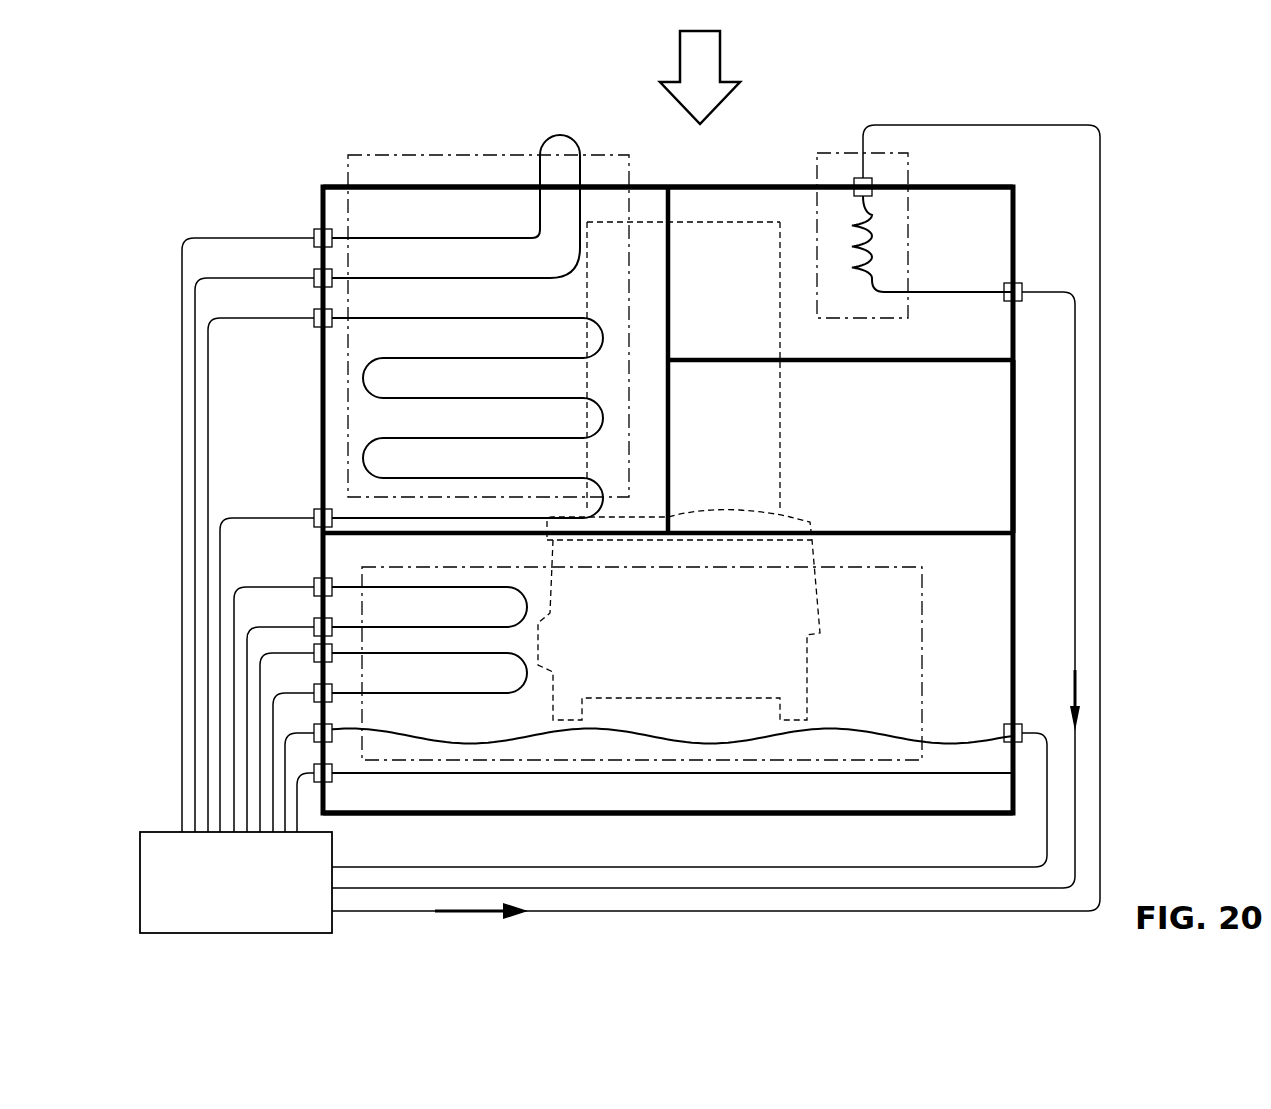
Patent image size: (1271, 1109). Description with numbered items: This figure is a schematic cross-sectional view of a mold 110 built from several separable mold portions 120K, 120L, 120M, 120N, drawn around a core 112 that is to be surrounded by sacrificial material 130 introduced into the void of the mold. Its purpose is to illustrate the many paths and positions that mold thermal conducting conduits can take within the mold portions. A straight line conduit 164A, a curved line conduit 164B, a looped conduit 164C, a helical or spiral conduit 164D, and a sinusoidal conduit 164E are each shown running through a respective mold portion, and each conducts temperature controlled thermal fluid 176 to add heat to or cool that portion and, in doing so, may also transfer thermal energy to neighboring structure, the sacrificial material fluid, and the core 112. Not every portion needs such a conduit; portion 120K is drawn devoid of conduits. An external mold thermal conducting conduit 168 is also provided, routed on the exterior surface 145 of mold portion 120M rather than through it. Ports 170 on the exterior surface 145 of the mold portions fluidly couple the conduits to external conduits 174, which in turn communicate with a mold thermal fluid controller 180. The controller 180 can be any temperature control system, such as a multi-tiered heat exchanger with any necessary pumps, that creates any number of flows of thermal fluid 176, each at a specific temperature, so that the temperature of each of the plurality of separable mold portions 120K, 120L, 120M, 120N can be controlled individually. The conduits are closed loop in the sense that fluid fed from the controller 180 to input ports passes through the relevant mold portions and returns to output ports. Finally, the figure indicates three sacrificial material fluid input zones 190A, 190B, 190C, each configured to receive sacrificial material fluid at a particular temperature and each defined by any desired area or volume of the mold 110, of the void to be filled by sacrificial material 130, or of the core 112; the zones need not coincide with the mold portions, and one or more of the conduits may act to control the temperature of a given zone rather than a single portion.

The mold 110 is at (427, 172).
The core 112 is at (707, 222).
The sacrificial material 130 is at (720, 55).
The exterior surface 145 is at (655, 185).
The separable mold portion 120M is at (420, 218).
The separable mold portion 120N is at (1007, 218).
The separable mold portion 120K is at (980, 398).
The separable mold portion 120L is at (410, 563).
The mold thermal conducting conduit 164A is at (690, 773).
The mold thermal conducting conduit 164B is at (857, 730).
The mold thermal conducting conduit 164C is at (527, 662).
The mold thermal conducting conduit 164D is at (935, 292).
The mold thermal conducting conduit 164E is at (462, 318).
The external mold thermal conducting conduit 168 is at (560, 135).
The port 170 is at (313, 278).
The external conduit 174 is at (182, 578).
The temperature controlled thermal fluid 176 is at (1075, 698).
The mold thermal fluid controller 180 is at (220, 924).
The sacrificial material fluid input zone 190A is at (840, 153).
The sacrificial material fluid input zone 190B is at (850, 567).
The sacrificial material fluid input zone 190C is at (362, 155).